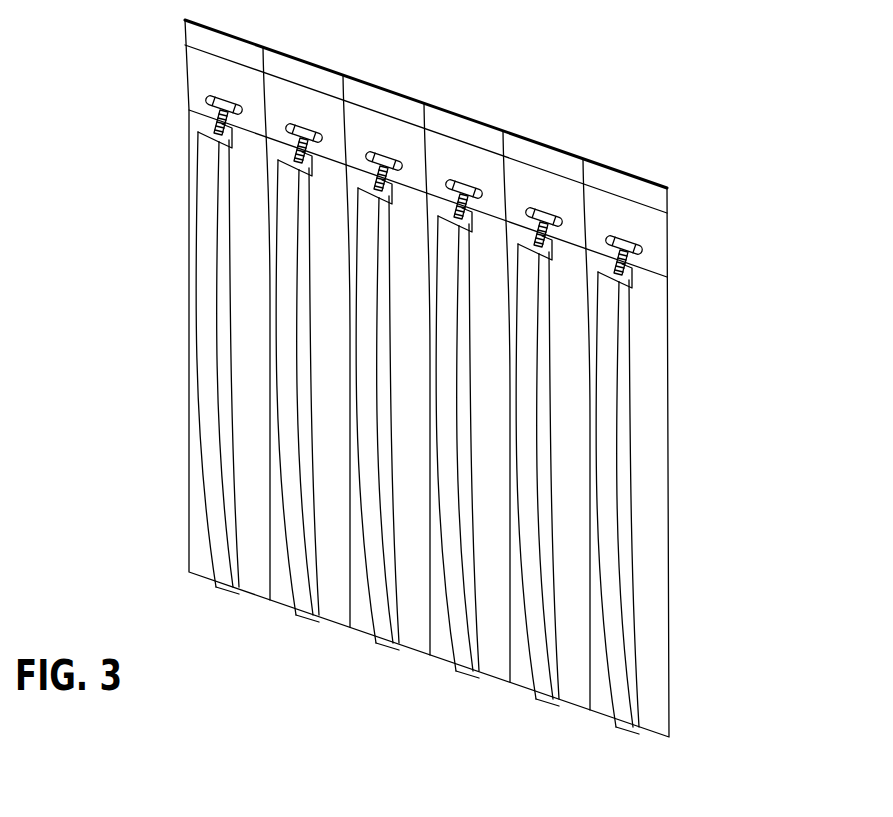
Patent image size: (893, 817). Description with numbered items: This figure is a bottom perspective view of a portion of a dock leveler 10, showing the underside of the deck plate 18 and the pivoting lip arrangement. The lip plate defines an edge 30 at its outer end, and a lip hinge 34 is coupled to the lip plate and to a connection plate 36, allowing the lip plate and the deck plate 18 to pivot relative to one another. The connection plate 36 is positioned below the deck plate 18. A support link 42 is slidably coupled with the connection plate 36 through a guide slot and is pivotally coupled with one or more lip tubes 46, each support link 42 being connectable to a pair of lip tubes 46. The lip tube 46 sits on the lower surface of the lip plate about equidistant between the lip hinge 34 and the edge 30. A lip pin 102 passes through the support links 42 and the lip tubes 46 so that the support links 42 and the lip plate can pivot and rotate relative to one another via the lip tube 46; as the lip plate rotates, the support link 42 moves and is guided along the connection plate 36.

The dock leveler 10 is at (150, 283).
The deck plate 18 is at (660, 420).
The edge 30 is at (452, 112).
The lip hinge 34 is at (637, 270).
The connection plate 36 is at (610, 337).
The support link 42 is at (399, 177).
The lip tube 46 is at (639, 241).
The lip pin 102 is at (628, 250).